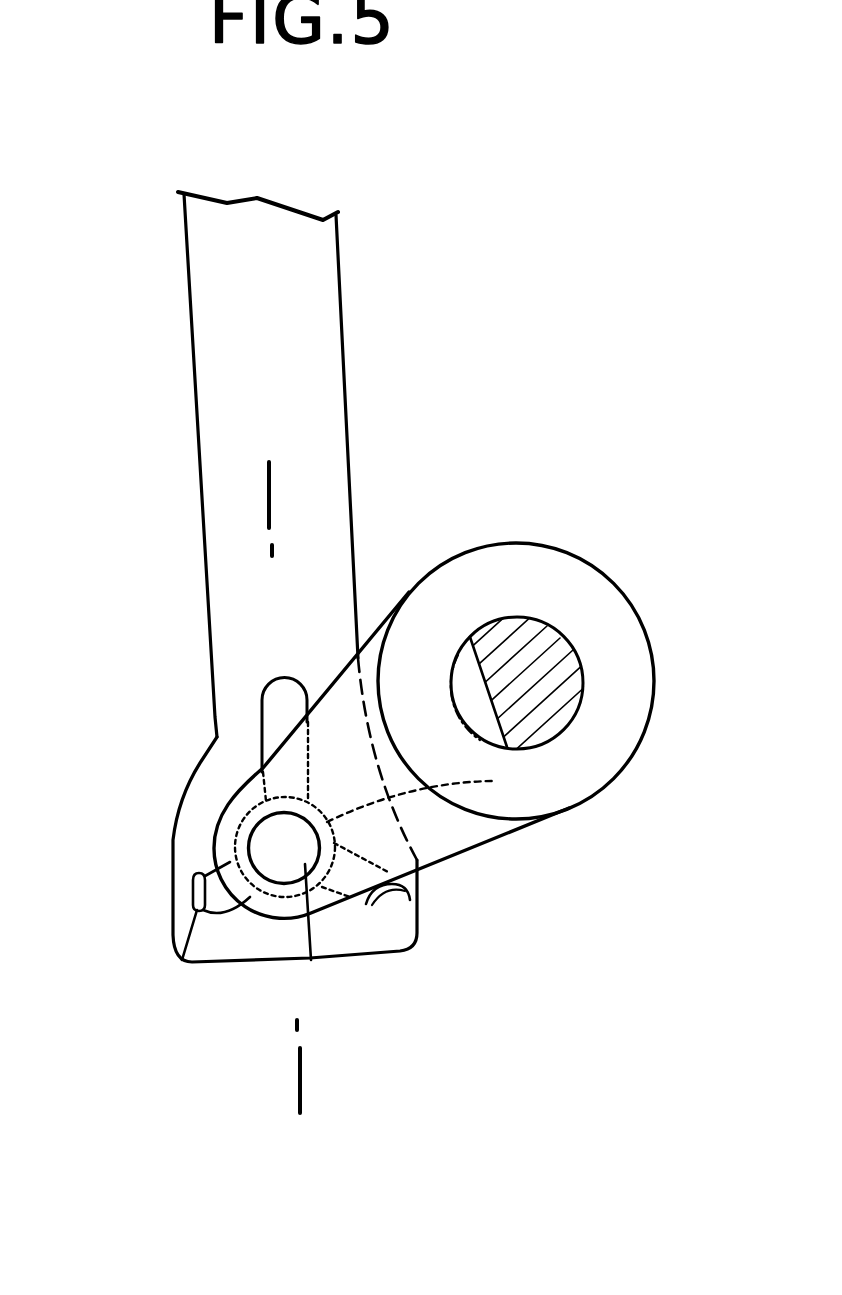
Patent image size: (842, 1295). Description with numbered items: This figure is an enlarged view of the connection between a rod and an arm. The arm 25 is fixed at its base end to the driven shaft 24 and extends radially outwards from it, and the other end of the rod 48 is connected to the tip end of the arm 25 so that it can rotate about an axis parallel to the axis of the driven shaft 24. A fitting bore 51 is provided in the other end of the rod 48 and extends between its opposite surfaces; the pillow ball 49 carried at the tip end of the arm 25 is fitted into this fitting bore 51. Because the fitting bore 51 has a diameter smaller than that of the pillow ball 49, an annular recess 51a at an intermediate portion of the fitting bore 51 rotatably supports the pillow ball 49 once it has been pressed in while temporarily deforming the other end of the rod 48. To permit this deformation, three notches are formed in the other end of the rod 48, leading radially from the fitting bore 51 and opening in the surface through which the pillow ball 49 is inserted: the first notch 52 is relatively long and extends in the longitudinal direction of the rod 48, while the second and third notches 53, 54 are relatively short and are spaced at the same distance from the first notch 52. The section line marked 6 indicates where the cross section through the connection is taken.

The driven shaft 24 is at (563, 684).
The arm 25 is at (453, 838).
The rod 48 is at (331, 418).
The pillow ball 49 is at (311, 960).
The fitting bore 51 is at (262, 840).
The annular recess 51a is at (493, 781).
The first notch 52 is at (260, 708).
The second notch 53 is at (182, 960).
The third notch 54 is at (418, 895).
The section line 6- 6 is at (258, 483).